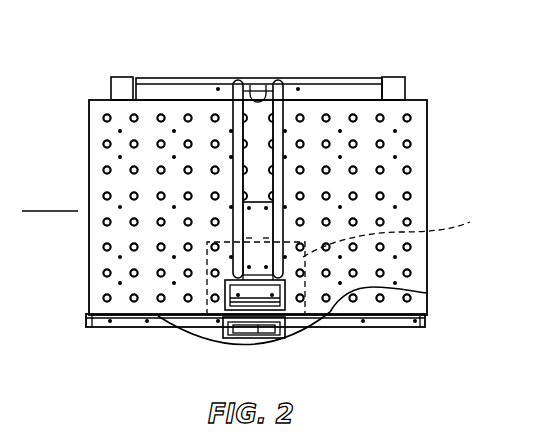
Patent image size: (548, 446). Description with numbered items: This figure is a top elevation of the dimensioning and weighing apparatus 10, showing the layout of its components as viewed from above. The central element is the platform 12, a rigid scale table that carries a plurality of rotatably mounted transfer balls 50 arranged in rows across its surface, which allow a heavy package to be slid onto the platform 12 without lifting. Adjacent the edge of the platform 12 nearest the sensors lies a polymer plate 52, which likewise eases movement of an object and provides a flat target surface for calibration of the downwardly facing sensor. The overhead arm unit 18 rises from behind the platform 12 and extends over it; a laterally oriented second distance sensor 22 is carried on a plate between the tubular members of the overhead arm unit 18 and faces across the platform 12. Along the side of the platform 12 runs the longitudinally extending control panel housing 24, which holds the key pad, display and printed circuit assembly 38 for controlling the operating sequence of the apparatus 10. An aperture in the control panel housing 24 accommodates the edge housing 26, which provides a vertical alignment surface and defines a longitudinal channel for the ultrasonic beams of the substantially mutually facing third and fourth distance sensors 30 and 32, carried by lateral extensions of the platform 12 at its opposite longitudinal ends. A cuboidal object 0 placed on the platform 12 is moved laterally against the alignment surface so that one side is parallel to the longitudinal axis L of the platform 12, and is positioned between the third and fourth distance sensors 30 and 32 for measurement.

The apparatus 10 is at (441, 253).
The platform 12 is at (417, 129).
The overhead arm unit 18 is at (278, 108).
The second distance sensor 22 is at (263, 90).
The control panel housing 24 is at (310, 327).
The edge housing 26 is at (427, 293).
The third distance sensor 30 is at (102, 314).
The fourth distance sensor 32 is at (405, 314).
The key pad, display and printed circuit assembly 38 is at (278, 340).
The transfer balls 50 is at (411, 170).
The polymer plate 52 is at (208, 318).
The cuboidal object 0 is at (396, 234).
The longitudinal axis L is at (50, 211).